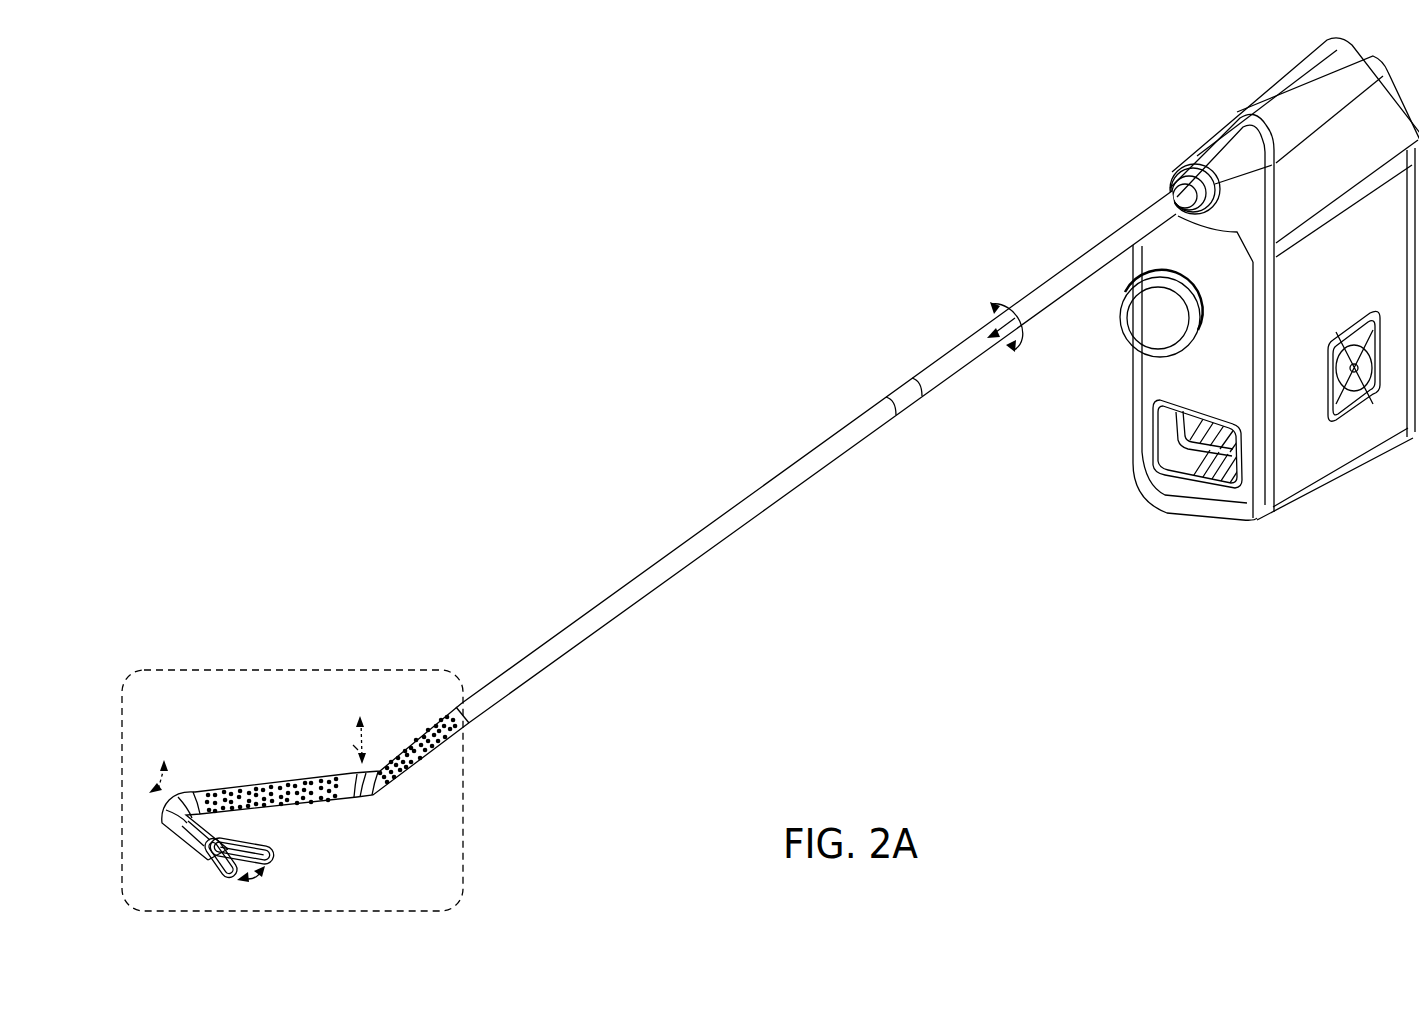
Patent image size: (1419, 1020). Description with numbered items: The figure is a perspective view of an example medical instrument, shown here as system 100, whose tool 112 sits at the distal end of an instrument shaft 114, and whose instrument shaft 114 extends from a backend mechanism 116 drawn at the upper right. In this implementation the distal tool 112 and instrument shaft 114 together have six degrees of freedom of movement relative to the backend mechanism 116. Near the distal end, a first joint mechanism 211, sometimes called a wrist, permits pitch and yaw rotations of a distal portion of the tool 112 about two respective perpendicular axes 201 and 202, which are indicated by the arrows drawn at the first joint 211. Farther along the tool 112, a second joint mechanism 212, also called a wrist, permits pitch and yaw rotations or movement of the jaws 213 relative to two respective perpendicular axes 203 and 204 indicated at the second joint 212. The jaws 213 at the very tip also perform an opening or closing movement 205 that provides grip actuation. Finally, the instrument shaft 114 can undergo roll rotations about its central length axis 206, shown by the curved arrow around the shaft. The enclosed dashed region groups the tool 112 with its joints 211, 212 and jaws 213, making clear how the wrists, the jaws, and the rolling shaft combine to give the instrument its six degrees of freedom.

The surgical instrument system 100 is at (904, 153).
The tool 112 is at (307, 709).
The instrument shaft 114 is at (1068, 268).
The backend mechanism 116 is at (1357, 301).
The axis 201 is at (366, 718).
The axis 202 is at (353, 745).
The axis 203 is at (158, 772).
The axis 204 is at (175, 772).
The opening or closing movement 205 is at (248, 882).
The central length axis 206 is at (1007, 343).
The first joint mechanism 211 is at (372, 795).
The second joint mechanism 212 is at (160, 815).
The jaws 213 is at (205, 865).